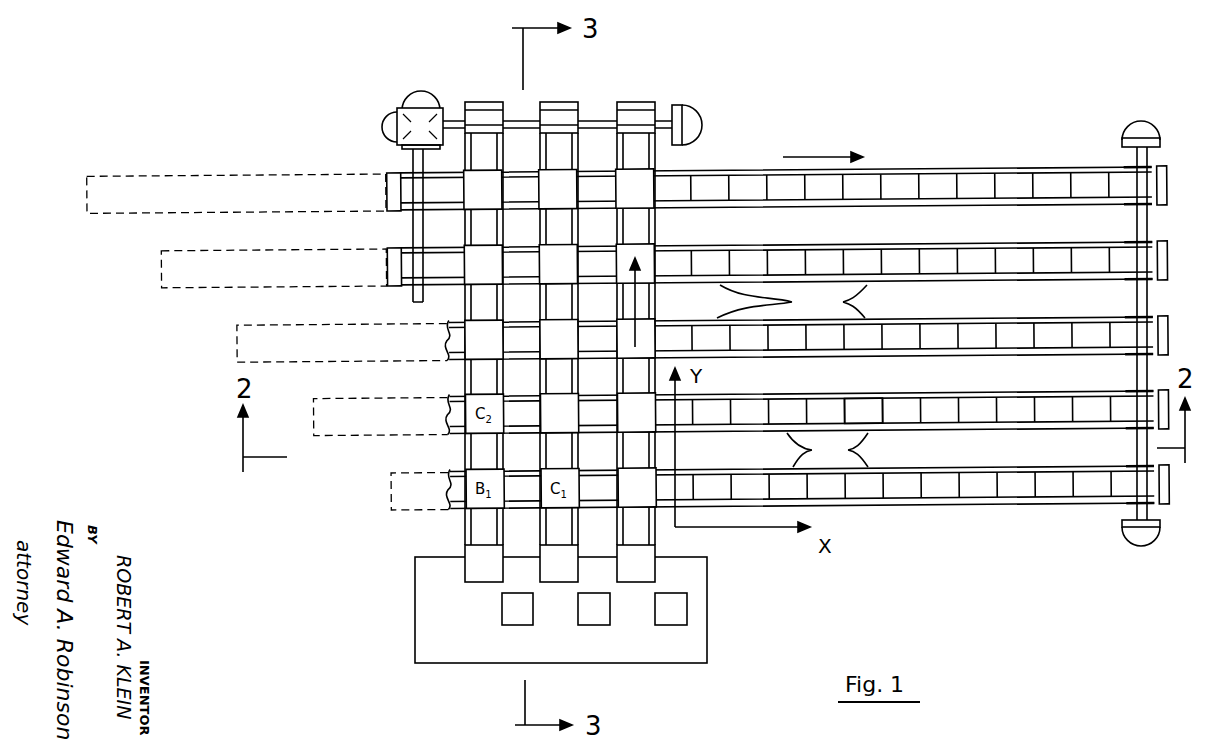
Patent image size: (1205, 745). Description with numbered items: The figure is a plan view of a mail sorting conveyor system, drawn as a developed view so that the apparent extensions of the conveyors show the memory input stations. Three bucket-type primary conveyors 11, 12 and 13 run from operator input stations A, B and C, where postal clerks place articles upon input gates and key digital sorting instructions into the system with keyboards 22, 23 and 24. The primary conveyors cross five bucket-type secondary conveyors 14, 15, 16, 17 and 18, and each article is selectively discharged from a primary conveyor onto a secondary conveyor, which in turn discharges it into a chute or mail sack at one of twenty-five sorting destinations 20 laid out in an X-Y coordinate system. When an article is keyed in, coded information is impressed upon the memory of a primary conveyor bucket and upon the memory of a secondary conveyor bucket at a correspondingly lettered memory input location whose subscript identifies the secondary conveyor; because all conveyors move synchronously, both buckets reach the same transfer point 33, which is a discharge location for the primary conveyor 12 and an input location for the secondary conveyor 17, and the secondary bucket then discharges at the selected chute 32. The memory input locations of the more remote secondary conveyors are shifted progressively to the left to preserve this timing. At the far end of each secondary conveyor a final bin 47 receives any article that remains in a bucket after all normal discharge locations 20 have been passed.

The primary conveyor 11 is at (477, 102).
The primary conveyor 12 is at (556, 102).
The primary conveyor 13 is at (632, 102).
The secondary conveyor 14 is at (983, 165).
The secondary conveyor 15 is at (983, 248).
The secondary conveyor 16 is at (983, 321).
The secondary conveyor 17 is at (983, 396).
The secondary conveyor 18 is at (983, 471).
The sorting destinations 20 is at (792, 376).
The keyboard 22 is at (517, 626).
The keyboard 23 is at (594, 626).
The keyboard 24 is at (671, 626).
The mail sack or chute 32 is at (865, 410).
The transfer point 33 is at (563, 410).
The final bin 47 is at (1083, 182).